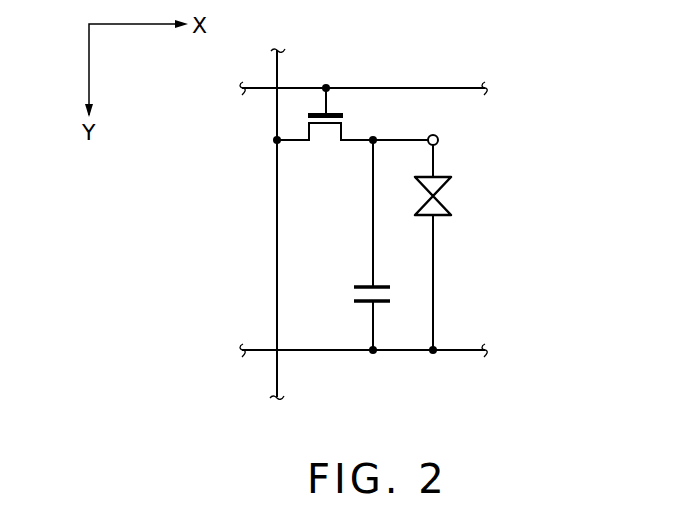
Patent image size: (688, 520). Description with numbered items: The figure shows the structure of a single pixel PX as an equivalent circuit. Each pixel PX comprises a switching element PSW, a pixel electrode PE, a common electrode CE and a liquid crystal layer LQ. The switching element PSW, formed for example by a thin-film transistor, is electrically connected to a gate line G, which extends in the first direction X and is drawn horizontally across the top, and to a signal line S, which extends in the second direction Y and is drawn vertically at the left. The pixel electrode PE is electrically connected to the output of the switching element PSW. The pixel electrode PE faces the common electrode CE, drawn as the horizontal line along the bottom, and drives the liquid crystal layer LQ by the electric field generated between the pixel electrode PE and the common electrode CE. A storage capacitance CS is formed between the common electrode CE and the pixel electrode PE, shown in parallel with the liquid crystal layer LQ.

The gate line G is at (262, 86).
The signal line S is at (276, 192).
The switching element PSW is at (362, 124).
The pixel electrode PE is at (439, 140).
The pixel PX is at (532, 123).
The liquid crystal layer LQ is at (462, 195).
The storage capacitance CS is at (347, 291).
The common electrode CE is at (458, 352).